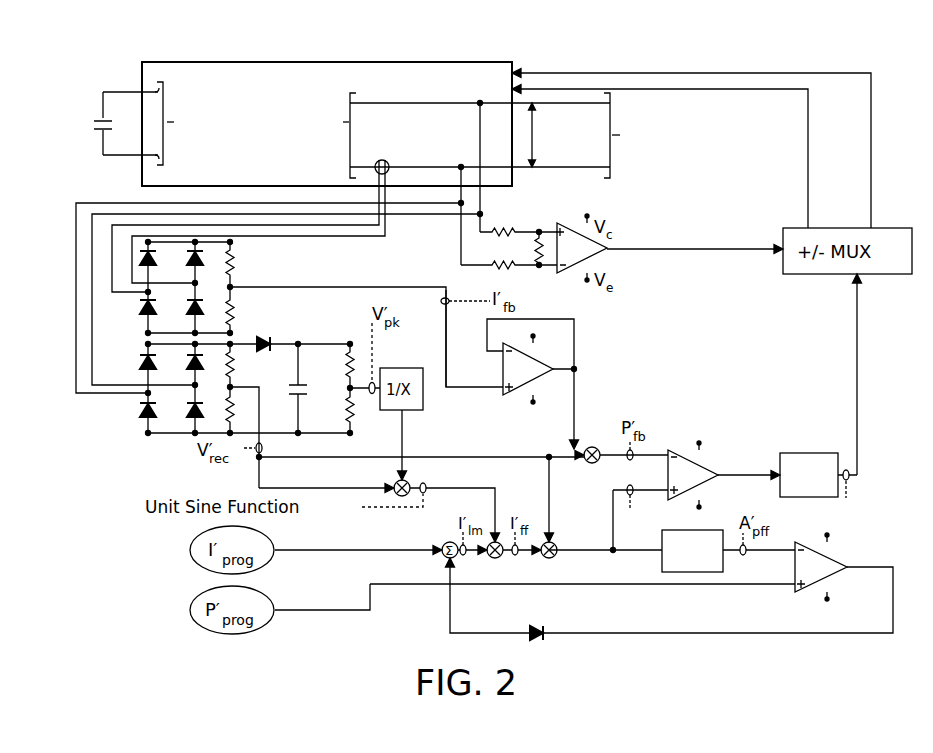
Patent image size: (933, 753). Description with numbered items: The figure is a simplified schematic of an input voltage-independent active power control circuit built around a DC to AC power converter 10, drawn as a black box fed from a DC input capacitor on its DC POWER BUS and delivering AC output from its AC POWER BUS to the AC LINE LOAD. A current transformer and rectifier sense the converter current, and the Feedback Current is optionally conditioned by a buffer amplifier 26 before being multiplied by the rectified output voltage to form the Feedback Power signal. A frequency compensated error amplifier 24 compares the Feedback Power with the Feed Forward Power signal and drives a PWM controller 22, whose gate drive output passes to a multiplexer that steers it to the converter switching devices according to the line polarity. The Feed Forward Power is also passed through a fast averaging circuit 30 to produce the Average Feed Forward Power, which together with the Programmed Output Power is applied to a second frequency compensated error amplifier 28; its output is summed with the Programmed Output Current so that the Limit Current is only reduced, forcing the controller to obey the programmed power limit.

The DC to AC power converter 10 is at (270, 88).
The PWM controller 22 is at (780, 462).
The frequency compensated error amplifier 24 is at (693, 470).
The buffer amplifier 26 is at (524, 378).
The frequency compensated error amplifier 28 is at (813, 582).
The fast averaging circuit 30 is at (688, 530).